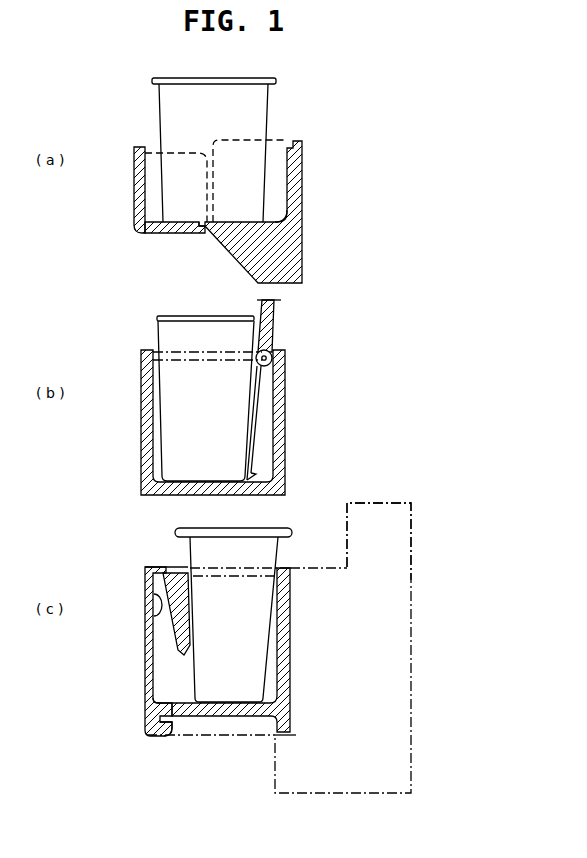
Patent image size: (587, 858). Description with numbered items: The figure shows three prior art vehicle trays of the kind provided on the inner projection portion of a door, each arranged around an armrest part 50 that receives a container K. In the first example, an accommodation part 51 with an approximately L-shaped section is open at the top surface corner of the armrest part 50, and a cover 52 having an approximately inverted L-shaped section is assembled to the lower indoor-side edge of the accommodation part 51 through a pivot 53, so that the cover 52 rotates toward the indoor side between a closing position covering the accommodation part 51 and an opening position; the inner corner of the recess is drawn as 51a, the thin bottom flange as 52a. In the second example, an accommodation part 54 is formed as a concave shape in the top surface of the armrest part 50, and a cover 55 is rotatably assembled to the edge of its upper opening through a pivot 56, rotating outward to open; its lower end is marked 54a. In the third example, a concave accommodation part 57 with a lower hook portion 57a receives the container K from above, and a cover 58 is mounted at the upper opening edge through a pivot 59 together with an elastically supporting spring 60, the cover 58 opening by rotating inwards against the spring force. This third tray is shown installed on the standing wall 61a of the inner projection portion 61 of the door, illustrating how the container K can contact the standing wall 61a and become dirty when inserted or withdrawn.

The container K is at (266, 101).
The armrest part 50 is at (316, 262).
The accommodation part 51 is at (275, 153).
The inner corner of recess 51a is at (279, 214).
The cover 52 is at (140, 207).
The bottom flange 52a is at (152, 224).
The pivot 53 is at (204, 234).
The accommodation part 54 is at (267, 412).
The lower end of pressing plate 54a is at (259, 476).
The cover 55 is at (275, 318).
The pivot 56 is at (273, 358).
The accommodation part 57 is at (160, 674).
The hook portion 57a is at (153, 694).
The cover 58 is at (181, 633).
The pivot 59 is at (162, 578).
The elastically supporting spring 60 is at (157, 617).
The inner projection portion 61 is at (383, 663).
The standing wall 61a is at (385, 530).